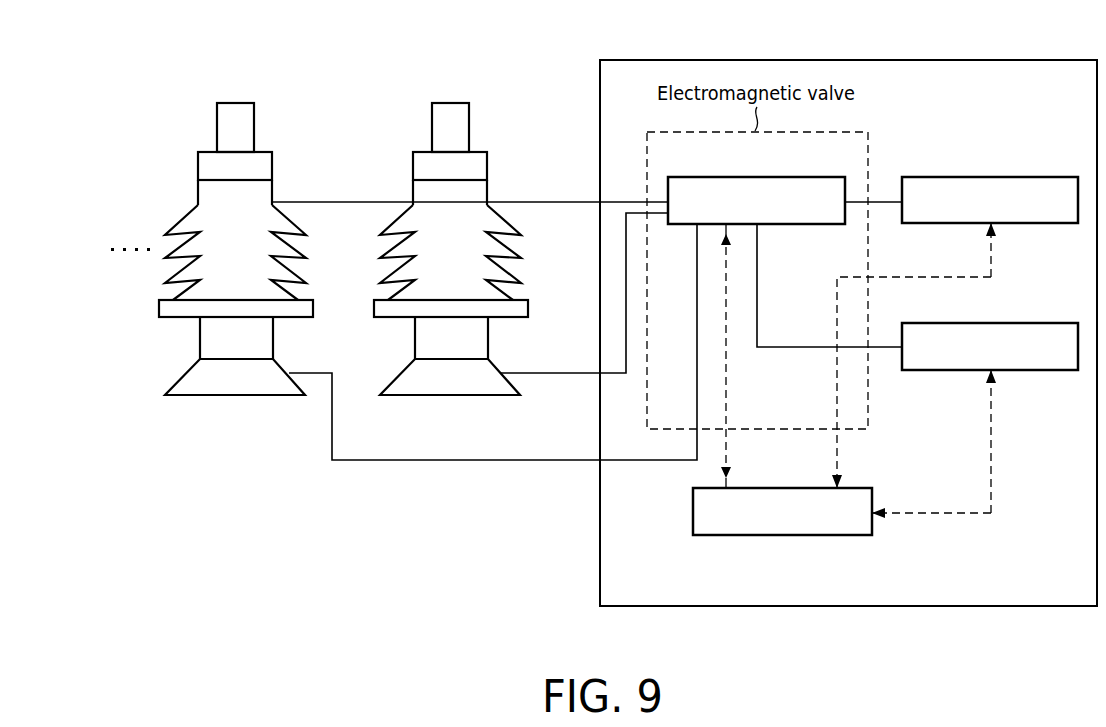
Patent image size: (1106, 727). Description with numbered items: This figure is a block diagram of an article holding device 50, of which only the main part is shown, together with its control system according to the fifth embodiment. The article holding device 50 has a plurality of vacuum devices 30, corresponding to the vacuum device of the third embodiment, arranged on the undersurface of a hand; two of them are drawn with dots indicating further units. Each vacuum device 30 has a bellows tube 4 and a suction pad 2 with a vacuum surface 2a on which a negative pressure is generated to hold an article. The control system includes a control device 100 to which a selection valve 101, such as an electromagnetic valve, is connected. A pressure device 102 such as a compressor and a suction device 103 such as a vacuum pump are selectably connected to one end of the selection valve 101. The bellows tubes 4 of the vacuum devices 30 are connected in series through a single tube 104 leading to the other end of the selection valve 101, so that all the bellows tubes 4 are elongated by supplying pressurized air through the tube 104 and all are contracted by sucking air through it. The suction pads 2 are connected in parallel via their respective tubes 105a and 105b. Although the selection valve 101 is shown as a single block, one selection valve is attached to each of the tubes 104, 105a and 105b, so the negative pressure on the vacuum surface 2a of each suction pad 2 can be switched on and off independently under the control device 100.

The suction pad 2 is at (195, 385).
The vacuum surface 2a is at (240, 398).
The bellows tube 4 is at (298, 275).
The vacuum device 30 is at (183, 145).
The article holding device 50 is at (481, 88).
The control device 100 is at (783, 538).
The selection valve 101 is at (795, 228).
The pressure device 102 is at (988, 176).
The suction device 103 is at (1030, 322).
The tube 104 is at (550, 200).
The tube 105a is at (550, 371).
The tube 105b is at (552, 462).